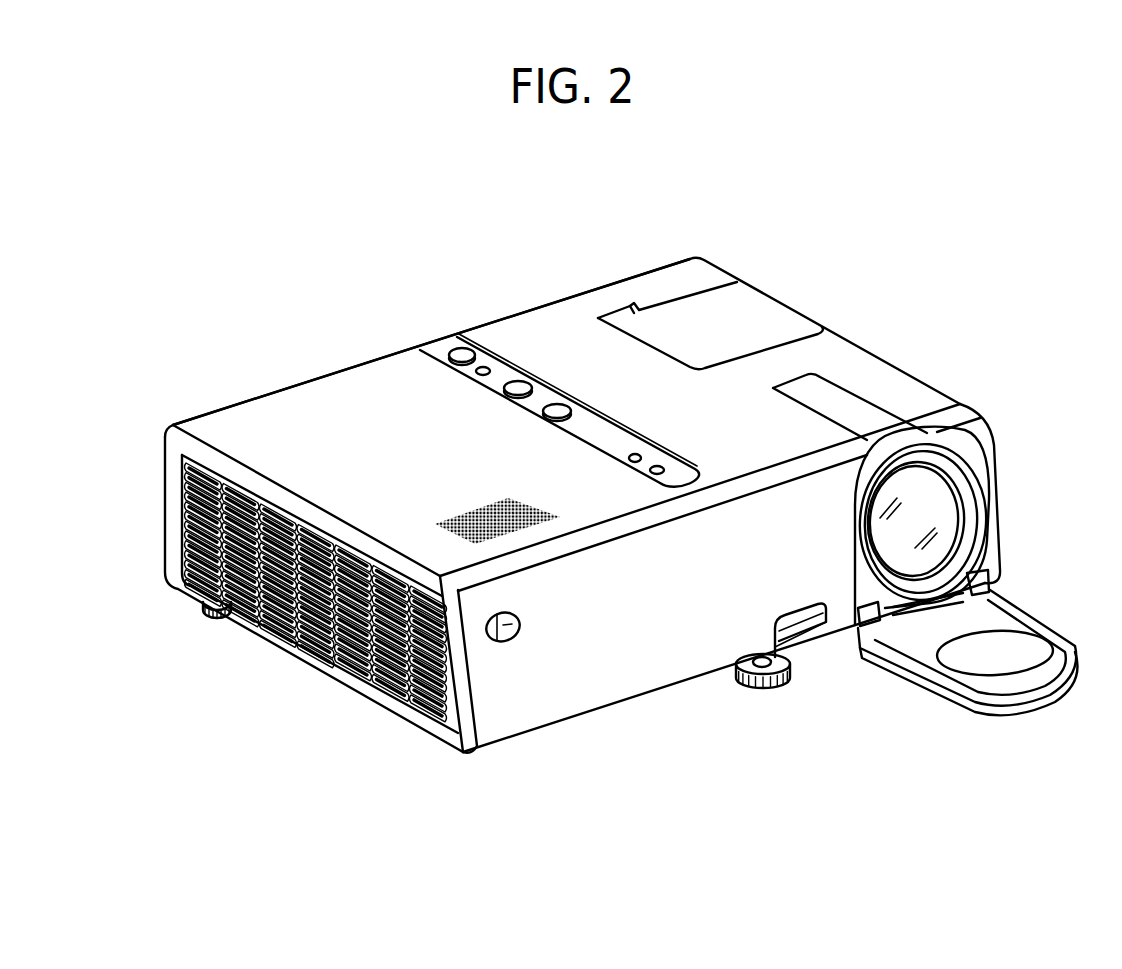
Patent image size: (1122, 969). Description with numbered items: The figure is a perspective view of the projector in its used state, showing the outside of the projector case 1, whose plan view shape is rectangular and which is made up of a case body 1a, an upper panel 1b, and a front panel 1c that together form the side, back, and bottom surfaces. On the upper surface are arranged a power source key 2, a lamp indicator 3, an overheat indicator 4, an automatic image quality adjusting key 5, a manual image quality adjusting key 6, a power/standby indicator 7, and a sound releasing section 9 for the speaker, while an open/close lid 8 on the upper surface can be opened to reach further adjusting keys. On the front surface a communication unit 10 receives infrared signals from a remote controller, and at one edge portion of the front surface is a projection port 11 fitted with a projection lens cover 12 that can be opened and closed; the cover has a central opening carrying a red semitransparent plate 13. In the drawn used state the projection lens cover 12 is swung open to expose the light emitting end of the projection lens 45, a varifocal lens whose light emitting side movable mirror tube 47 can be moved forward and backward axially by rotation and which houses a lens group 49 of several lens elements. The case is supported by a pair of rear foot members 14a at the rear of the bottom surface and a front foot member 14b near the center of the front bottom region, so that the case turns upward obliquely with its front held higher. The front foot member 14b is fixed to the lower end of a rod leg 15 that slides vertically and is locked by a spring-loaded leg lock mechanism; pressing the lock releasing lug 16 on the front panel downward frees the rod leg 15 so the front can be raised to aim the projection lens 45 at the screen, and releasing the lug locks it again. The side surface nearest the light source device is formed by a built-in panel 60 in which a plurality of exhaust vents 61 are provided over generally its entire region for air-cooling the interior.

The projector case 1 is at (298, 382).
The case body 1a is at (166, 492).
The upper panel 1b is at (578, 306).
The front panel 1c is at (597, 690).
The power source key 2 is at (462, 355).
The lamp indicator 3 is at (660, 470).
The overheat indicator 4 is at (637, 458).
The automatic image quality adjusting key 5 is at (560, 412).
The manual image quality adjusting key 6 is at (521, 390).
The power/standby indicator 7 is at (487, 372).
The open/close lid 8 is at (748, 300).
The sound releasing section 9 is at (478, 500).
The communication unit 10 is at (511, 632).
The projection port 11 is at (984, 552).
The projection lens cover 12 is at (936, 690).
The semitransparent plate 13 is at (1030, 656).
The rear foot members 14a is at (217, 614).
The front foot member 14b is at (773, 688).
The rod leg 15 is at (758, 663).
The lock releasing lug 16 is at (808, 640).
The projection lens 45 is at (967, 490).
The light emitting side movable mirror tube 47 is at (962, 466).
The lens group 49 is at (885, 538).
The built-in panel 60 is at (448, 745).
The exhaust vents 61 is at (318, 623).